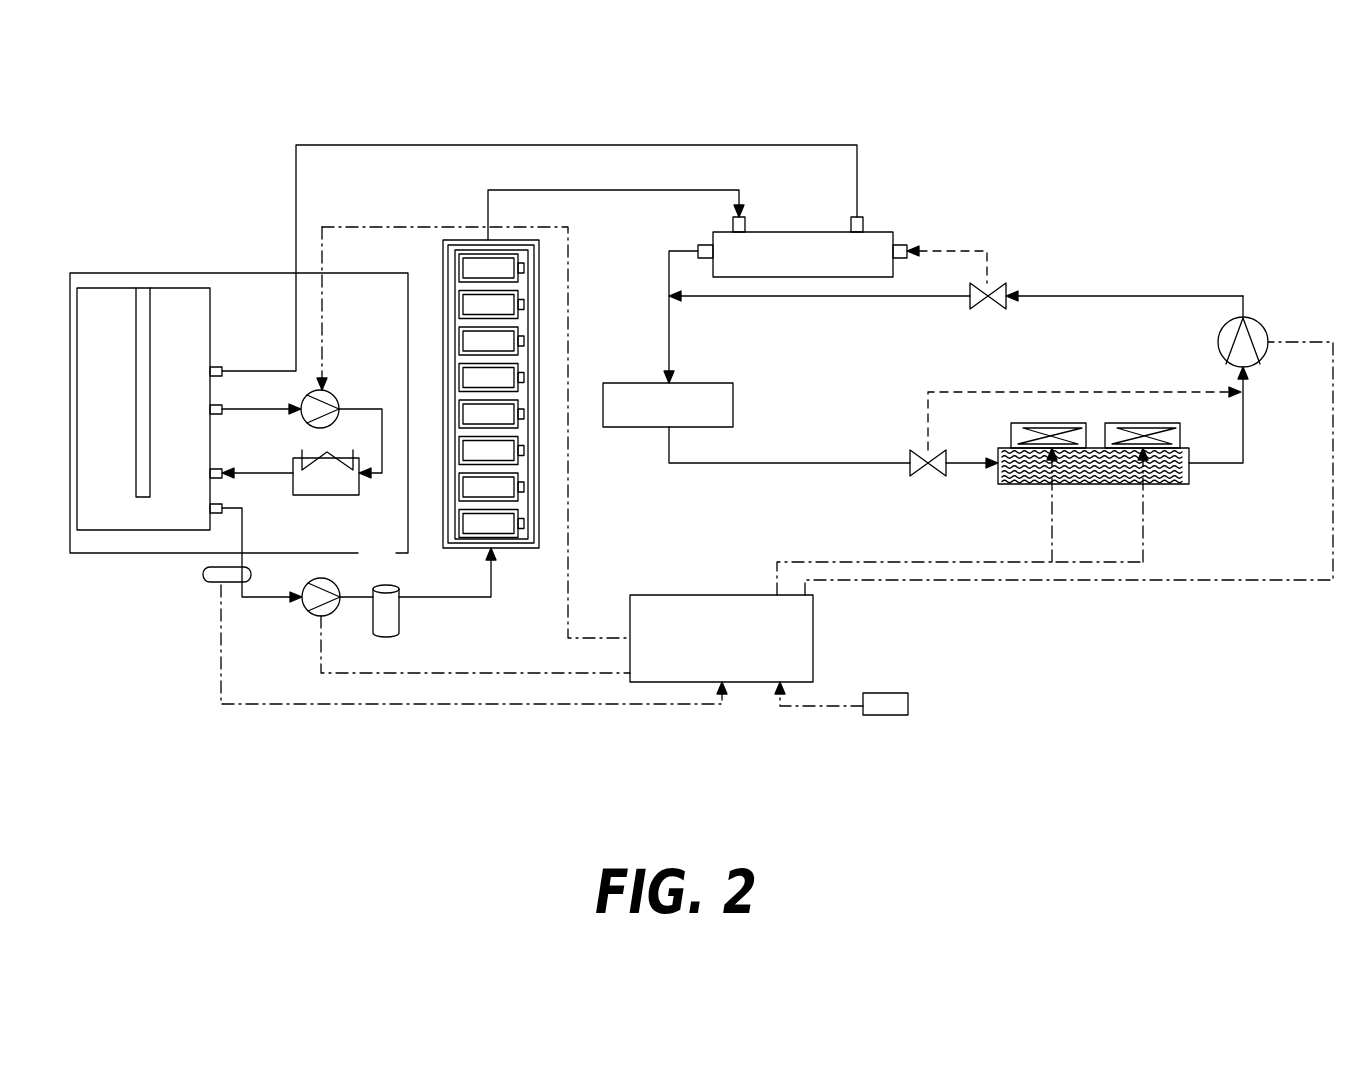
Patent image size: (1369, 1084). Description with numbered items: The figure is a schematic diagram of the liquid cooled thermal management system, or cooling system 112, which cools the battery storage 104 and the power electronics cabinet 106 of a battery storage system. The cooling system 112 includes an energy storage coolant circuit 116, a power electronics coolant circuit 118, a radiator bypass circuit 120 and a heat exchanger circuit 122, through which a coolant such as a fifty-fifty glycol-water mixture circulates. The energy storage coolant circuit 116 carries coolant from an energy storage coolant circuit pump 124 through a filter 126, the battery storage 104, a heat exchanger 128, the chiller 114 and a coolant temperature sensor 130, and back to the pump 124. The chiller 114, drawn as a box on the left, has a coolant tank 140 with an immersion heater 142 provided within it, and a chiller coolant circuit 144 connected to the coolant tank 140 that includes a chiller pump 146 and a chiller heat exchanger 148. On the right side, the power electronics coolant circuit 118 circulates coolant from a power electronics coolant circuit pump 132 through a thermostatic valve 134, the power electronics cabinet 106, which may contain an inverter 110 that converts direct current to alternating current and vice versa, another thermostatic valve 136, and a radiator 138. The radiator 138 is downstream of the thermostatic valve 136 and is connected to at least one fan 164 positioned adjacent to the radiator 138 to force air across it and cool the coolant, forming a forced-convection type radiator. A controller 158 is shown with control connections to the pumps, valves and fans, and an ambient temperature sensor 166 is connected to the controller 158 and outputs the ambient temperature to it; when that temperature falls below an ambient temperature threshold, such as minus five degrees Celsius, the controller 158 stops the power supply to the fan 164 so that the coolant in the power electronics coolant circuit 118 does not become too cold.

The cooling system 112 is at (192, 158).
The chiller 114 is at (352, 273).
The coolant tank 140 is at (212, 312).
The immersion heater 142 is at (150, 362).
The chiller pump 146 is at (336, 394).
The chiller heat exchanger 148 is at (345, 495).
The chiller coolant circuit 144 is at (250, 473).
The energy storage coolant circuit pump 124 is at (338, 585).
The coolant temperature sensor 130 is at (203, 572).
The filter 126 is at (399, 622).
The energy storage coolant circuit 116 is at (490, 600).
The battery storage 104 is at (523, 549).
The heat exchanger 128 is at (762, 232).
The heat exchanger circuit 122 is at (945, 251).
The thermostatic valve 134 is at (998, 284).
The power electronics coolant circuit pump 132 is at (1262, 326).
The power electronics coolant circuit 118 is at (1245, 425).
The power electronics cabinet 106 is at (710, 402).
The inverter 110 is at (733, 410).
The radiator bypass circuit 120 is at (966, 392).
The thermostatic valve 136 is at (918, 478).
The radiator 138 is at (1189, 478).
The fan 164 is at (1050, 423).
The controller 158 is at (678, 595).
The ambient temperature sensor 166 is at (885, 715).